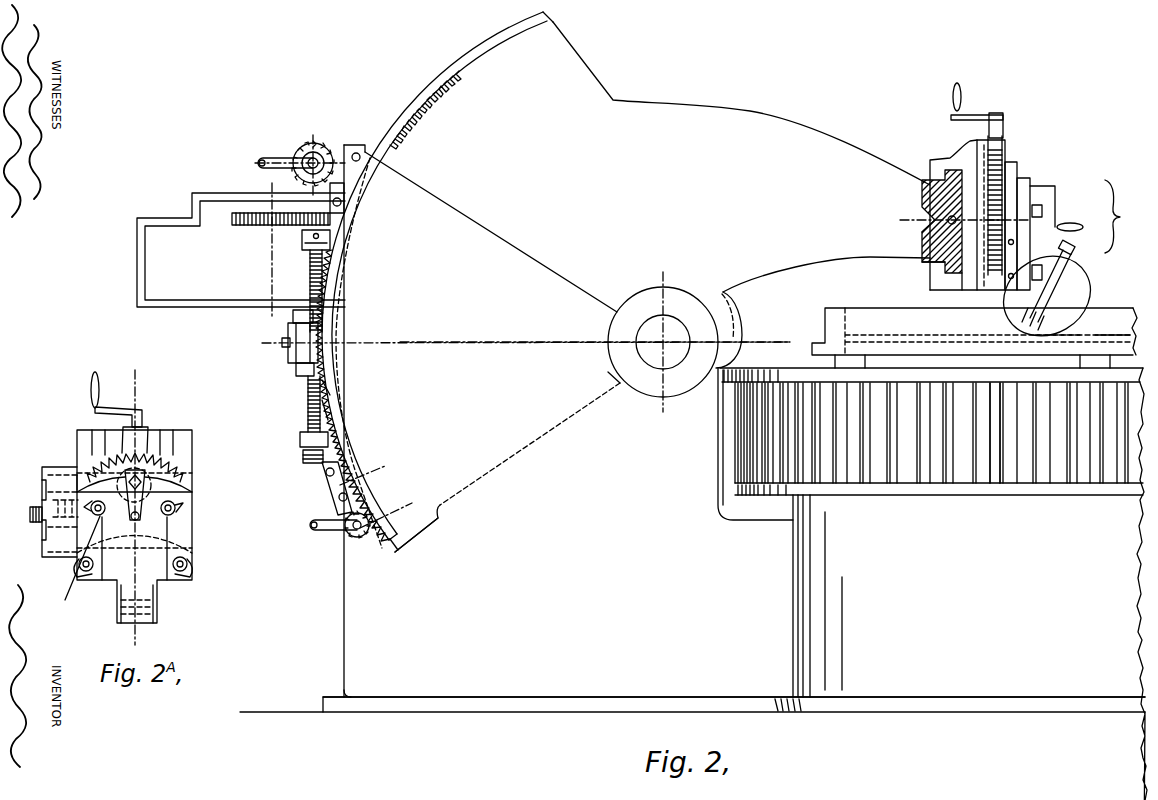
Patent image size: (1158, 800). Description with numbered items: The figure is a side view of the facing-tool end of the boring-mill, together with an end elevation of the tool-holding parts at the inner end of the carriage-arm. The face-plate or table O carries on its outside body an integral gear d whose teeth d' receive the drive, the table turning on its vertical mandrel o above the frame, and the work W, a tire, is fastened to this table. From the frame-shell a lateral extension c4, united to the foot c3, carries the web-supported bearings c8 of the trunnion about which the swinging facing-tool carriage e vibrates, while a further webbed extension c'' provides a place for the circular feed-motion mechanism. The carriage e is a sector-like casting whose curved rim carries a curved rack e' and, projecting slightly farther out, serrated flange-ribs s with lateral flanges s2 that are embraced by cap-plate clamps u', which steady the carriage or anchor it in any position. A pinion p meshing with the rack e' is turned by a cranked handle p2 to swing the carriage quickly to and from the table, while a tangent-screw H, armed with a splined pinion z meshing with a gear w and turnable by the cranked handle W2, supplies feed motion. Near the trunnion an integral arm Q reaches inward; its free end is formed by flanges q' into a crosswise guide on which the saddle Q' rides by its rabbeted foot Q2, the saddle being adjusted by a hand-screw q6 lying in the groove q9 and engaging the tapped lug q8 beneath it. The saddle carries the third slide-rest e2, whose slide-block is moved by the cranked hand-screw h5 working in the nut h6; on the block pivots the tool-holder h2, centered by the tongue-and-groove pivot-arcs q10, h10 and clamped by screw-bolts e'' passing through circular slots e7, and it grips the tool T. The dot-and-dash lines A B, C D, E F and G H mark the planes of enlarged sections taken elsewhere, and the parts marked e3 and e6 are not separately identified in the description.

In FIG. 2, the section line E F E is at (298, 545).
In FIG. 2, the section line E F is at (386, 515).
In FIG. 2, the inwardly-reaching arm Q is at (823, 282).
In FIG. 2, the gear w is at (663, 342).
In FIG. 2, the web-supported bearing c8 is at (651, 374).
In FIG. 2, the lateral extension c4 is at (484, 536).
In FIG. 2, the section line A B A is at (519, 342).
In FIG. 2, the section line A B is at (588, 342).
In FIG. 2, the section line C D C is at (385, 466).
In FIG. 2, the section line C D is at (362, 475).
In FIG. 2, the webbed extension c'' is at (241, 396).
In FIG. 2, the foot c3 is at (981, 700).
In FIG. 2, the work W is at (250, 226).
In FIG. 2, the splined pinion z is at (302, 236).
In FIG. 2, the tangent-screw H is at (310, 272).
In FIG. 2, the facing-tool carriage e is at (655, 400).
In FIG. 2, the section line G H G is at (290, 352).
In FIG. 2, the serrated flange-rib s is at (326, 420).
In FIG. 2, the lateral flange s2 is at (328, 396).
In FIG. 2, the cap-plate clamp u' is at (332, 313).
In FIG. 2, the curved rack e' is at (341, 129).
In FIG. 2, the pinion-wheel p is at (352, 538).
In FIG. 2, the cranked operating-handle p2 is at (312, 527).
In FIG. 2, the gear d is at (932, 584).
In FIG. 2, the gear teeth d' is at (963, 433).
In FIG. 2, the face-plate table O is at (925, 535).
In FIG. 2, the mandrel o is at (972, 362).
In FIG. 2, the cranked handle W2 is at (974, 331).
In FIG. 2, the tool T is at (1111, 325).
In FIG. 2, the rabbeted foot Q2 is at (935, 270).
In FIG. 2, the saddle Q' is at (965, 284).
In FIG. 2, the flange q' is at (940, 208).
In FIG. 2A, the flange q' is at (50, 504).
In FIG. 2, the tapped lug q8 is at (948, 219).
In FIG. 2, the hand-screw q6 is at (935, 227).
In FIG. 2, the groove q9 is at (955, 237).
In FIG. 2, the cranked hand-screw h5 is at (1008, 160).
In FIG. 2, the nut h6 is at (1010, 210).
In FIG. 2, the pivot-arc q10 is at (1011, 240).
In FIG. 2, the circular slot e7 is at (982, 104).
In FIG. 2A, the circular slot e7 is at (105, 405).
In FIG. 2, the clamping-screw bolt e'' is at (1056, 233).
In FIG. 2A, the clamping-screw bolt e'' is at (137, 550).
In FIG. 2, the slide-rest e2 is at (1122, 216).
In FIG. 2, the tool-holder h2 is at (1068, 276).
In FIG. 2A, the pivot-arc h10 is at (180, 535).
In FIG. 2A, the gear e3 is at (66, 484).
In FIG. 2A, the stud e6 is at (27, 514).